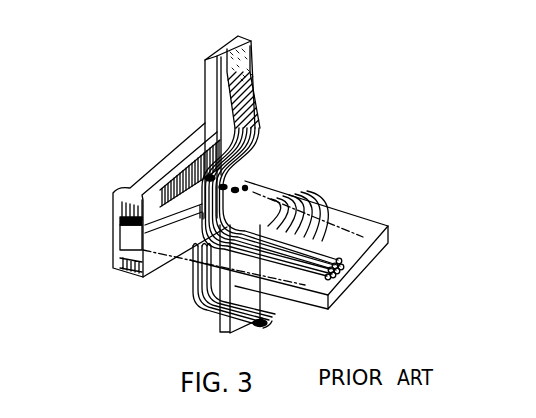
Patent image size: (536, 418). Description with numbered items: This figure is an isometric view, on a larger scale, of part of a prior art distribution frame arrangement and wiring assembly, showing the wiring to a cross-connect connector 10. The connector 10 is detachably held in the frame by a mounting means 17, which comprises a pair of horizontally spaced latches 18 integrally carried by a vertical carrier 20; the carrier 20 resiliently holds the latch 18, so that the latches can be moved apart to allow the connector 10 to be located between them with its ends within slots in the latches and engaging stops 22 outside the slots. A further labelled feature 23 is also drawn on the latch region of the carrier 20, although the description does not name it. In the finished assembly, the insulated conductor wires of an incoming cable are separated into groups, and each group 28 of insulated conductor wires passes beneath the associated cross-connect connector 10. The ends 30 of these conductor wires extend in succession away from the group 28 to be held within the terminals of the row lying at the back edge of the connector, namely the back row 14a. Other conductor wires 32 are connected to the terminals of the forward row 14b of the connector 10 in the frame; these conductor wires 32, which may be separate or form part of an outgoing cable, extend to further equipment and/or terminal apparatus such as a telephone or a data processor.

The cross-connect connector 10 is at (362, 218).
The back row of terminals 14a is at (345, 222).
The forward row of terminals 14b is at (178, 248).
The mounting means 17 is at (105, 188).
The latch 18 is at (145, 188).
The vertical carrier 20 is at (205, 70).
The stop 22 is at (215, 177).
The channel wall 23 is at (178, 178).
The group of insulated conductor wires 28 is at (255, 98).
The ends of the conductor wires 30 is at (328, 211).
The other conductor wires 32 is at (198, 297).